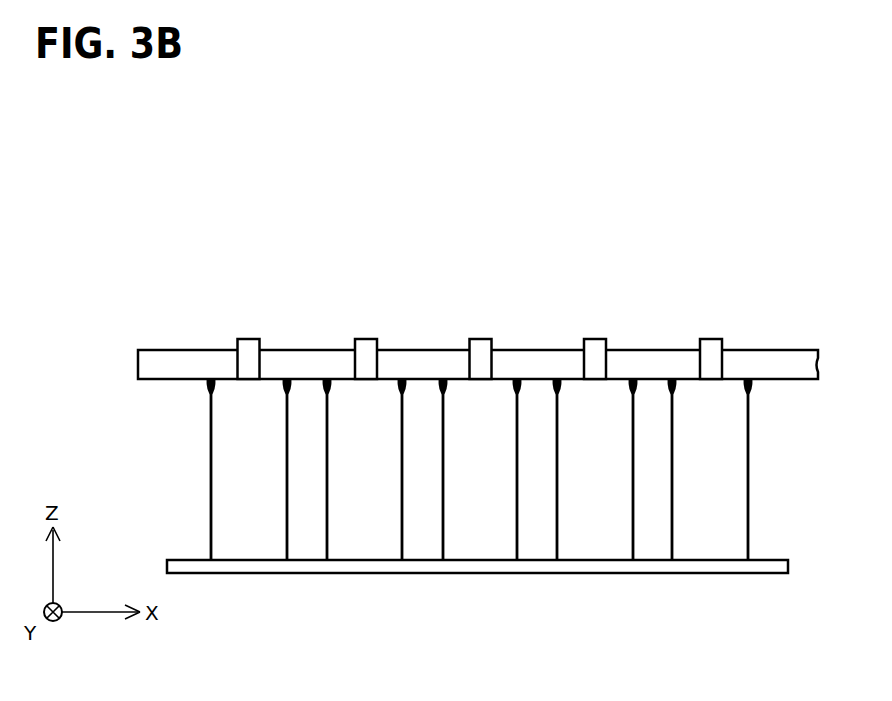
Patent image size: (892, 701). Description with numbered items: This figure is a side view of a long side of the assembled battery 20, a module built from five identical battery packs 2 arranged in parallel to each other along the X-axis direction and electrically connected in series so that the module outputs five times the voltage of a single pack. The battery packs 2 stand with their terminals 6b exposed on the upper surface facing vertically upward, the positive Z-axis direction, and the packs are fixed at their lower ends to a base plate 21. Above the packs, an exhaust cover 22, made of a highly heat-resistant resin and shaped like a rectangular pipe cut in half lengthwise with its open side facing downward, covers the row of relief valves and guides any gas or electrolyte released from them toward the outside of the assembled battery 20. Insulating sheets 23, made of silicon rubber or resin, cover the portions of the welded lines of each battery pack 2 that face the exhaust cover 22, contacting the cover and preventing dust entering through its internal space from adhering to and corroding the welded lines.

The battery pack 2 is at (229, 546).
The terminal 6b is at (484, 322).
The assembled battery 20 is at (478, 322).
The base plate 21 is at (765, 571).
The exhaust cover 22 is at (787, 363).
The insulating sheet 23 is at (330, 378).